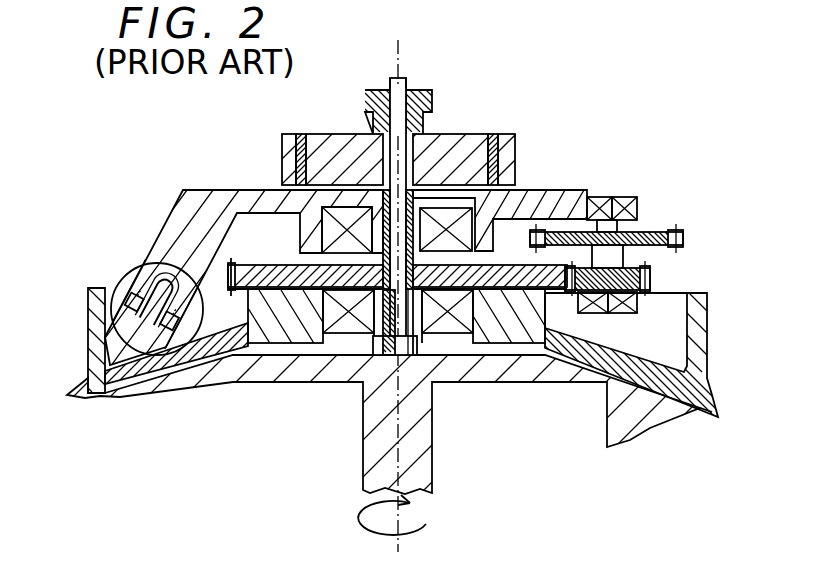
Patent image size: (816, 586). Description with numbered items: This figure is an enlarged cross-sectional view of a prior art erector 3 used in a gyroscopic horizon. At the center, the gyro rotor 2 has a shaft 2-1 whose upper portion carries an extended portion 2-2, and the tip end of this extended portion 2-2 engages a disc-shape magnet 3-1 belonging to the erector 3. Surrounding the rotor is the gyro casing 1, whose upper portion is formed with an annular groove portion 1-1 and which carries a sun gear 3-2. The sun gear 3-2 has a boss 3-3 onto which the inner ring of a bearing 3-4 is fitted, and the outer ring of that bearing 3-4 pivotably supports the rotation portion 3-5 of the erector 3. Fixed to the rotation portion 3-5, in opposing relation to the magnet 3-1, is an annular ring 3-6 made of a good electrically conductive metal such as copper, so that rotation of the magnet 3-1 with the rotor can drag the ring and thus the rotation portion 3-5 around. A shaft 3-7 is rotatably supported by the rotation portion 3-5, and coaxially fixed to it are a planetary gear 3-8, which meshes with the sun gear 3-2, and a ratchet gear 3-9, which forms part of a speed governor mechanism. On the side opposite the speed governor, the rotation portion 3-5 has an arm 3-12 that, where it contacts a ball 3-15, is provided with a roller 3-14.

The gyro casing 1 is at (712, 388).
The annular groove portion 1-1 is at (110, 345).
The gyro rotor 2 is at (610, 436).
The shaft 2-1 is at (428, 338).
The extended portion 2-2 is at (400, 78).
The erector 3 is at (409, 258).
The disc-shape magnet 3-1 is at (460, 140).
The sun gear 3-2 is at (507, 352).
The boss 3-3 is at (325, 236).
The bearing 3-4 is at (470, 248).
The rotation portion 3-5 is at (548, 196).
The annular ring 3-6 is at (496, 133).
The shaft 3-7 is at (612, 196).
The planetary gear 3-8 is at (650, 280).
The ratchet gear 3-9 is at (652, 233).
The arm 3-12 is at (178, 218).
The roller 3-14 is at (130, 292).
The ball 3-15 is at (132, 268).